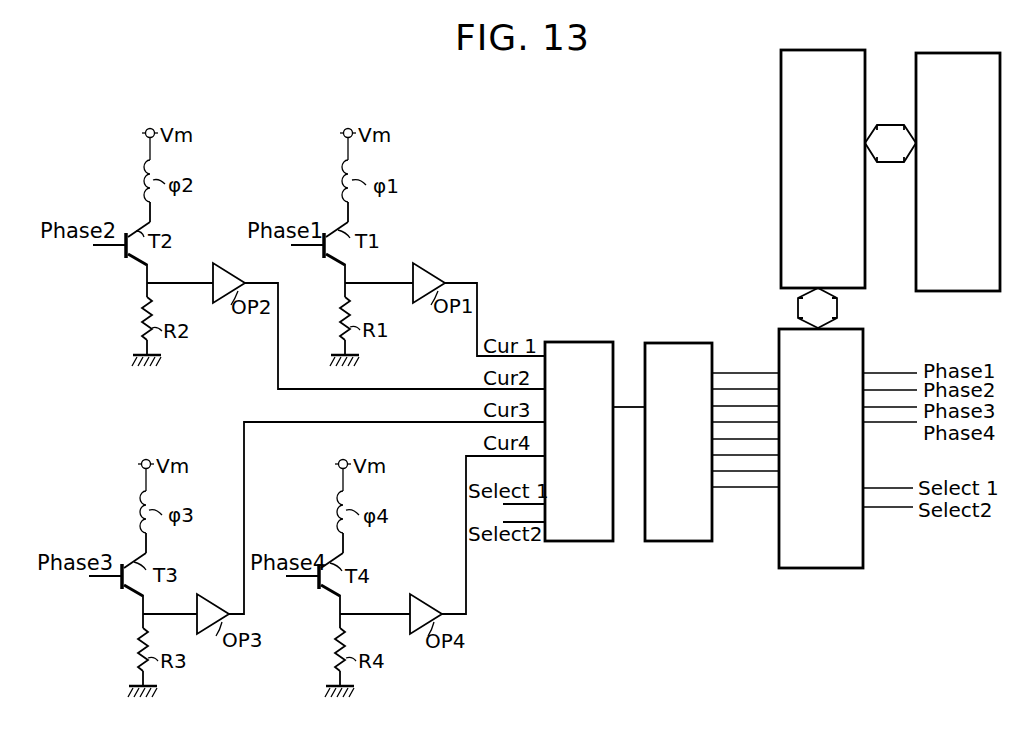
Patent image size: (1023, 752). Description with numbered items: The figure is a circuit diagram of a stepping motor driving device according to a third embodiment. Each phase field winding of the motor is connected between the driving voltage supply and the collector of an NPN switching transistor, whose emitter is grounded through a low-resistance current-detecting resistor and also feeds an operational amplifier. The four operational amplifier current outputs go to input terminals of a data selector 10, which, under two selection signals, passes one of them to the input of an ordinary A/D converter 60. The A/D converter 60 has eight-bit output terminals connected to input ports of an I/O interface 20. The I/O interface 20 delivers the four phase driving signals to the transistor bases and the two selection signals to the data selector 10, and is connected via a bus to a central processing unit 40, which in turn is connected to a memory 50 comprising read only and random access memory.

The data selector 10 is at (588, 346).
The I/O interface 20 is at (823, 569).
The central processing unit 40 is at (781, 203).
The memory 50 is at (924, 203).
The A/D converter 60 is at (693, 346).